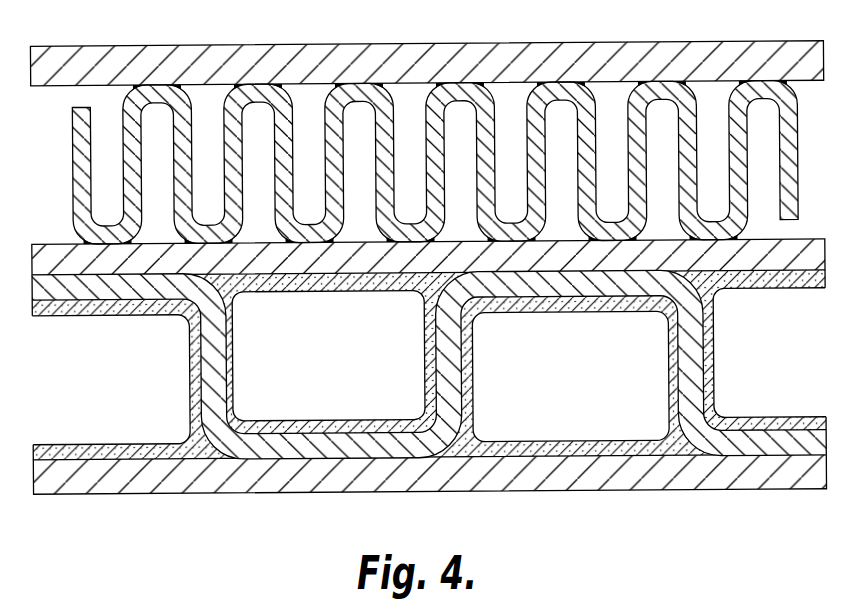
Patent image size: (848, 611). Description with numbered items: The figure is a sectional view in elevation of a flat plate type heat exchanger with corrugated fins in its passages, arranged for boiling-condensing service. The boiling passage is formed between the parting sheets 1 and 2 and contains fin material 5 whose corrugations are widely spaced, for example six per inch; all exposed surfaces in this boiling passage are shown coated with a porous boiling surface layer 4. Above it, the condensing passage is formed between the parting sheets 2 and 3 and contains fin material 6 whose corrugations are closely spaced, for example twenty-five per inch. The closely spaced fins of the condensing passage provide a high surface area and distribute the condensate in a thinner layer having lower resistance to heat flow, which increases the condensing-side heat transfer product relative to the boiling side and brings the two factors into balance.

The parting sheet 1 is at (532, 468).
The parting sheet 2 is at (350, 258).
The parting sheet 3 is at (232, 61).
The porous boiling surface layer 4 is at (295, 437).
The fin material 5 is at (208, 392).
The fin material 6 is at (382, 150).